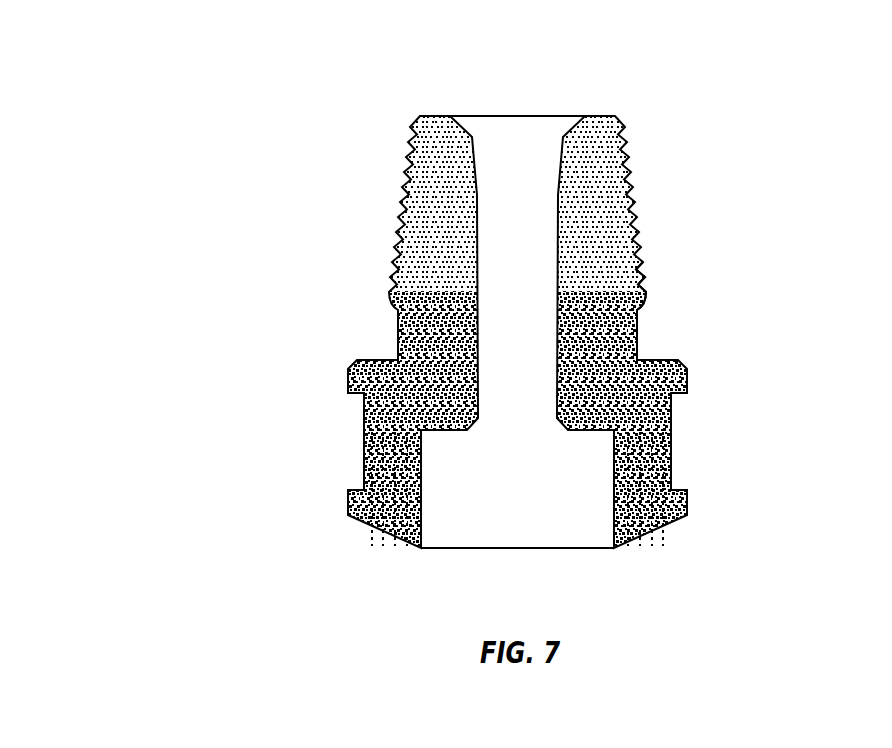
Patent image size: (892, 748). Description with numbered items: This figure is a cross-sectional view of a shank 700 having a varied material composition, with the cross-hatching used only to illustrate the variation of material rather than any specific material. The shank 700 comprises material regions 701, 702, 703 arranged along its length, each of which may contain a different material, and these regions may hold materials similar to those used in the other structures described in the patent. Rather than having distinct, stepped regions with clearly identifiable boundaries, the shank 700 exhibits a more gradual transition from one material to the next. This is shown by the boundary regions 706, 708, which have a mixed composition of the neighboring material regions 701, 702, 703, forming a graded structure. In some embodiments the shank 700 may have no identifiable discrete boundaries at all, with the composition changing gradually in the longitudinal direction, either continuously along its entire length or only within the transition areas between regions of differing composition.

The shank 700 is at (223, 98).
The material region 701 is at (385, 482).
The material region 702 is at (430, 355).
The material region 703 is at (430, 232).
The boundary region 706 is at (695, 388).
The boundary region 708 is at (652, 263).